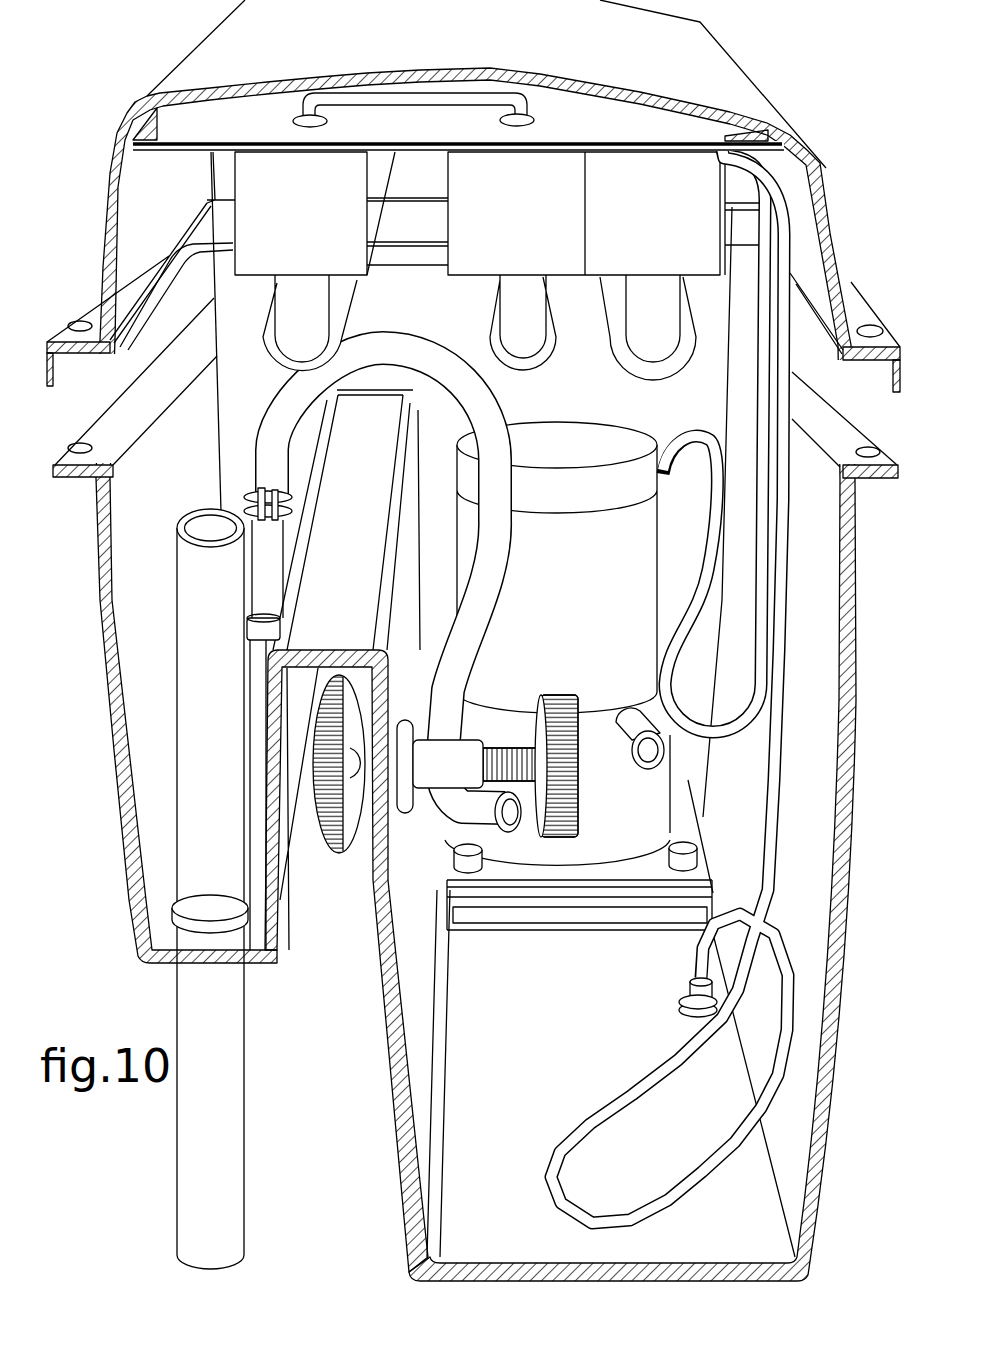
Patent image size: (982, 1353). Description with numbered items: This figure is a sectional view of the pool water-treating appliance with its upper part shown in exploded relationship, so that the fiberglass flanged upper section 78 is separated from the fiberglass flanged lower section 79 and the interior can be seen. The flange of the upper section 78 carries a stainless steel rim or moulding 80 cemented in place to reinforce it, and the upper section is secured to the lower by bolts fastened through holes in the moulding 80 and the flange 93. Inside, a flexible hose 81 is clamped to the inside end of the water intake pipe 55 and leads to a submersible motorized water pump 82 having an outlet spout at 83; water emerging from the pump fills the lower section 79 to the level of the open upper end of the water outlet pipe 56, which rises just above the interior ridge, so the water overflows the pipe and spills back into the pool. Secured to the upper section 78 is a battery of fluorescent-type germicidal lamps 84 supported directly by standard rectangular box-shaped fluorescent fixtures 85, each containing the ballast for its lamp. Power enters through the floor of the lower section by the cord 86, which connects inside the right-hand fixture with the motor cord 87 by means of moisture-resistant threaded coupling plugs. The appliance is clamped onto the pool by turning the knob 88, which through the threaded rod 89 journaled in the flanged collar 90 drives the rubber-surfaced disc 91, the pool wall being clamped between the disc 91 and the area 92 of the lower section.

The water intake pipe 55 is at (283, 557).
The water outlet pipe 56 is at (220, 601).
The flanged upper section 78 is at (744, 83).
The flanged lower section 79 is at (825, 746).
The stainless steel rim or moulding 80 is at (858, 314).
The flexible hose 81 is at (487, 416).
The submersible motorized water pump 82 is at (585, 578).
The outlet spout 83 is at (648, 753).
The germicidal lamps 84 is at (344, 305).
The fluorescent fixtures 85 is at (308, 226).
The cord 86 is at (704, 962).
The motor cord 87 is at (664, 653).
The knob 88 is at (556, 748).
The threaded rod 89 is at (496, 757).
The flanged collar 90 is at (451, 779).
The rubber surfaced disc 91 is at (344, 848).
The area of the lower section 92 is at (346, 961).
The flange 93 is at (95, 431).